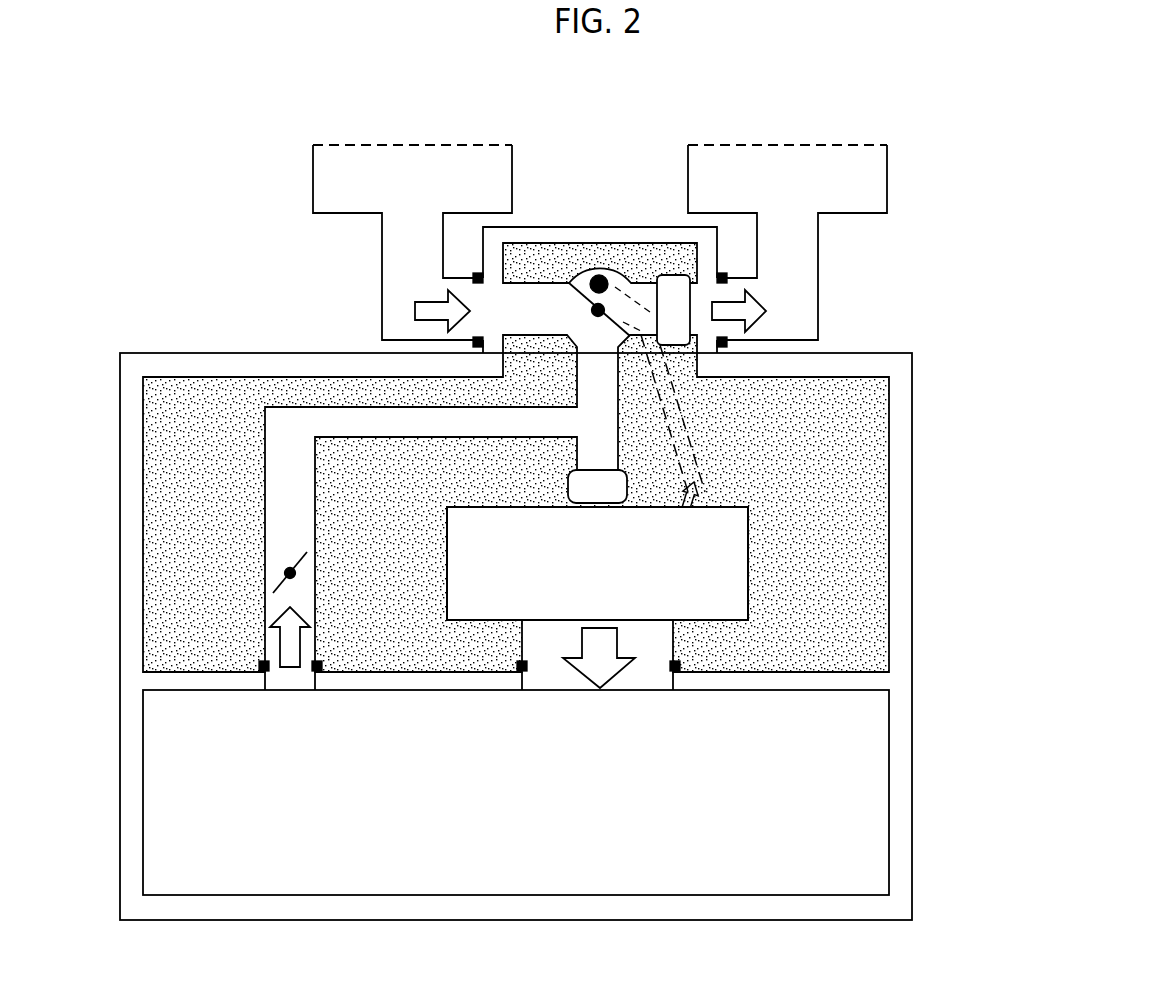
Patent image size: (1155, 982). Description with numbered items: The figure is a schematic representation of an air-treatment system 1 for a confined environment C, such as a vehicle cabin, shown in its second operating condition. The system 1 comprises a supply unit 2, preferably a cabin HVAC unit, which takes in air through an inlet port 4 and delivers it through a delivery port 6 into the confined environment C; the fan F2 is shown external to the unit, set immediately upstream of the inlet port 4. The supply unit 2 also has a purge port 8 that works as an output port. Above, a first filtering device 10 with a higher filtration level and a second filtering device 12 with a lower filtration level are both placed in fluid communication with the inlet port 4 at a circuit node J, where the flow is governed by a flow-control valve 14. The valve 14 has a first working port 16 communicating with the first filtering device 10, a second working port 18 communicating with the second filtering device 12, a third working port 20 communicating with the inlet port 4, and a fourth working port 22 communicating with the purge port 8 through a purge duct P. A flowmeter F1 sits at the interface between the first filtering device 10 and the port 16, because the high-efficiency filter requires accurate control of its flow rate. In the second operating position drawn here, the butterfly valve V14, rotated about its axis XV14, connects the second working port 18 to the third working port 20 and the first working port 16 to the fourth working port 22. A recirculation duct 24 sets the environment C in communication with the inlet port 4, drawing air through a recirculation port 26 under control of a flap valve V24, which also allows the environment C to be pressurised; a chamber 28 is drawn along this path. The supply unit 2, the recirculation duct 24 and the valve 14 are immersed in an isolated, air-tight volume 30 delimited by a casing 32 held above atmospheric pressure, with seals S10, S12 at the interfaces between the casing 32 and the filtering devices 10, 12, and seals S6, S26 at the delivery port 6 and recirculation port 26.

The air-treatment system 1 is at (1066, 272).
The supply unit 2 is at (510, 575).
The inlet port 4 is at (602, 507).
The delivery port 6 is at (550, 622).
The purge port 8 is at (702, 512).
The first filtering device 10 is at (821, 185).
The second filtering device 12 is at (396, 193).
The flow-control valve 14 is at (587, 262).
The first working port 16 is at (655, 285).
The second working port 18 is at (566, 290).
The third working port 20 is at (608, 345).
The fourth working port 22 is at (627, 258).
The recirculation duct 24 is at (285, 467).
The recirculation port 26 is at (289, 680).
The chamber 28 is at (578, 420).
The isolated air-tight volume 30 is at (811, 526).
The casing 32 is at (900, 443).
The confined environment C is at (499, 806).
The circuit node J is at (615, 275).
The purge duct P is at (700, 428).
The flowmeter F1 is at (678, 296).
The fan F2 is at (568, 483).
The seal at delivery port S6 is at (672, 670).
The seal of first filtering device S10 is at (724, 274).
The seal of second filtering device S12 is at (476, 273).
The seal at recirculation port S26 is at (260, 665).
The butterfly valve V14 is at (578, 330).
The flap valve V24 is at (290, 568).
The axis XV14 is at (594, 311).